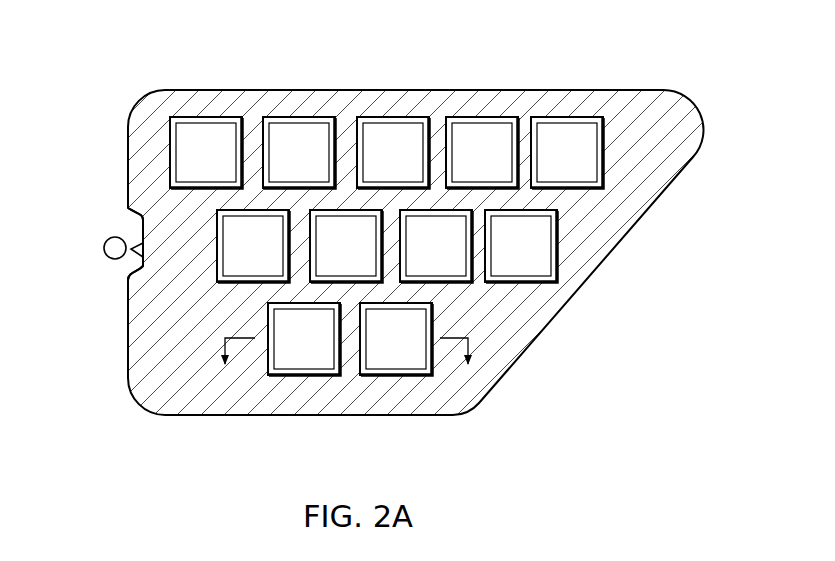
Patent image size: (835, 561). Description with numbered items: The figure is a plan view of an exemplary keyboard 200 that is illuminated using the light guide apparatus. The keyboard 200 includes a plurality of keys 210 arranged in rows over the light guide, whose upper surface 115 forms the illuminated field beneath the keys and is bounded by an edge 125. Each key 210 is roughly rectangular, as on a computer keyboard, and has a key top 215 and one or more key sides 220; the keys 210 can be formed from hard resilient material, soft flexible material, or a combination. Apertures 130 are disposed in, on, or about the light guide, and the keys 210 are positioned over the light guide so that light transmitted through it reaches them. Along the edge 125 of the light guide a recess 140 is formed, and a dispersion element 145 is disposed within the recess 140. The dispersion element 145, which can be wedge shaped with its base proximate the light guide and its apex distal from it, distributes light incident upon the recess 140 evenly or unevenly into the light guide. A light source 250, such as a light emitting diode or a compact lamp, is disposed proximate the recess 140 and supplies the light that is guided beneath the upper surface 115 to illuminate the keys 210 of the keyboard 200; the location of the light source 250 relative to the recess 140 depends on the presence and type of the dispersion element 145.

The keyboard 200 is at (390, 235).
The edge 125 is at (657, 200).
The aperture 130 is at (559, 255).
The upper surface 115 is at (503, 304).
The dispersion element 145 is at (136, 244).
The light source 250 is at (104, 248).
The recess 140 is at (128, 272).
The key top 215 is at (282, 349).
The key 210 is at (288, 378).
The key side 220 is at (420, 377).